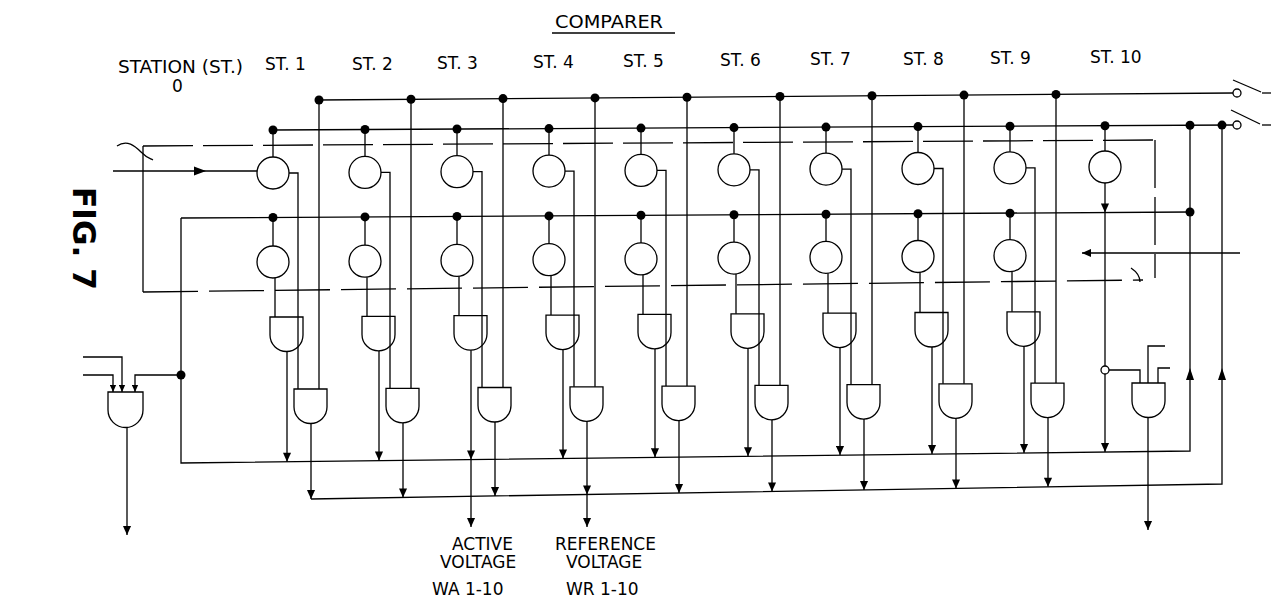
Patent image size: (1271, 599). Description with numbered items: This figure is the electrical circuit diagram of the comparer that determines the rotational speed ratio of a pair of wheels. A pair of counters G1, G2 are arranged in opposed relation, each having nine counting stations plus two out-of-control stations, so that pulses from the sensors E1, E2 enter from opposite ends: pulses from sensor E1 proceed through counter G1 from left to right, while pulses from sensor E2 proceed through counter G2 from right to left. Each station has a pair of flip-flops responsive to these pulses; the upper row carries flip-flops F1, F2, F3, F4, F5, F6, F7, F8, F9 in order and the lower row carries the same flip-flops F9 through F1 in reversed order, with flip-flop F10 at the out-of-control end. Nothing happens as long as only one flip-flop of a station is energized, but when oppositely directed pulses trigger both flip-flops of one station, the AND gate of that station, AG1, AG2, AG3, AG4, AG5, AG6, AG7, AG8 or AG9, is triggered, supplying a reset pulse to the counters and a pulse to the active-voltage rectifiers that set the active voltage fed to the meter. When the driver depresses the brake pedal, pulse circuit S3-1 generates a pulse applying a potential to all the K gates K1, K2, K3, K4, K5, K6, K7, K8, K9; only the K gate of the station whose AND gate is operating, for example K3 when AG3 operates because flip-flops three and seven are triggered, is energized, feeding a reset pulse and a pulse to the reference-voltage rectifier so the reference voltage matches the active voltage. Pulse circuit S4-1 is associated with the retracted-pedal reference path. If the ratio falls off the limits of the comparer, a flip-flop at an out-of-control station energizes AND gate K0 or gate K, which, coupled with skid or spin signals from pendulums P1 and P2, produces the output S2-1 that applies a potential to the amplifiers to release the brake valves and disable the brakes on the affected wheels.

The flip-flop F1 is at (641, 258).
The flip-flop F2 is at (641, 256).
The flip-flop F3 is at (641, 256).
The flip-flop F4 is at (641, 255).
The flip-flop F5 is at (645, 255).
The flip-flop F6 is at (646, 254).
The flip-flop F7 is at (646, 254).
The flip-flop F8 is at (646, 253).
The flip-flop F9 is at (646, 252).
The flip-flop F10 is at (1105, 286).
The AND gate AG1 is at (286, 370).
The AND gate AG2 is at (378, 368).
The AND gate AG3 is at (470, 401).
The AND gate AG4 is at (562, 367).
The AND gate AG5 is at (654, 366).
The AND gate AG6 is at (747, 365).
The AND gate AG7 is at (839, 364).
The AND gate AG8 is at (931, 364).
The AND gate AG9 is at (1023, 362).
The AND gate K0 is at (125, 463).
The K gate K1 is at (310, 298).
The K gate K2 is at (402, 296).
The K3 AND gate K3 is at (494, 295).
The K gate K4 is at (586, 310).
The K gate K5 is at (678, 293).
The K gate K6 is at (771, 291).
The K gate K7 is at (863, 290).
The K gate K8 is at (955, 290).
The K gate K9 is at (1047, 288).
The K gate K is at (1148, 434).
The sensor E1 is at (167, 175).
The sensor E2 is at (1173, 258).
The counter G1 is at (619, 214).
The counter G2 is at (643, 289).
The pendulum P1 is at (87, 370).
The pendulum P2 is at (117, 381).
The switch S2-1 is at (639, 554).
The pulse circuit S3-1 is at (1241, 74).
The pulse circuit S4-1 is at (1250, 135).